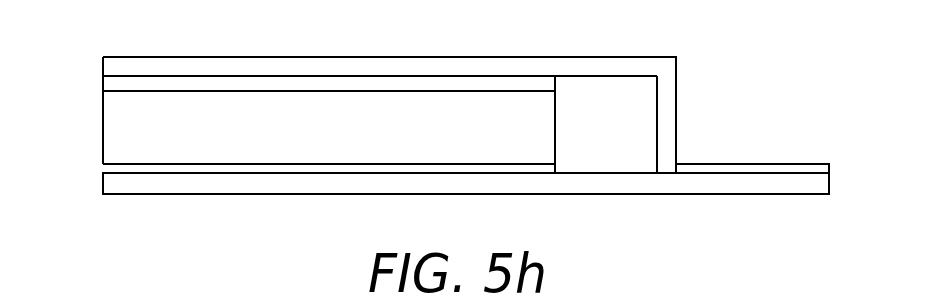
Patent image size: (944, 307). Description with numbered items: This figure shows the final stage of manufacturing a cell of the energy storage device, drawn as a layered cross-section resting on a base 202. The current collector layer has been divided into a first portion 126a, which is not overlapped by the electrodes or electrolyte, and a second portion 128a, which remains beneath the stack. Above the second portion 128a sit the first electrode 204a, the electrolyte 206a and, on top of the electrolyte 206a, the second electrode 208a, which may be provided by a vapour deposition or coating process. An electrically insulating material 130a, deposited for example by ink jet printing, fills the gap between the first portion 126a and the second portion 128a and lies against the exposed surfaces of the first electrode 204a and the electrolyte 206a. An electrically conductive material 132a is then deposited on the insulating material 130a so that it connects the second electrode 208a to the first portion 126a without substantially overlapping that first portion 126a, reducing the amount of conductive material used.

The substrate 202 is at (831, 192).
The first portion of the current collector layer 126a is at (753, 163).
The second portion of the current collector layer 128a is at (103, 168).
The first electrode 204a is at (103, 132).
The electrolyte 206a is at (103, 83).
The second electrode 208a is at (377, 57).
The electrically insulating material 130a is at (628, 140).
The electrically conductive material 132a is at (677, 105).